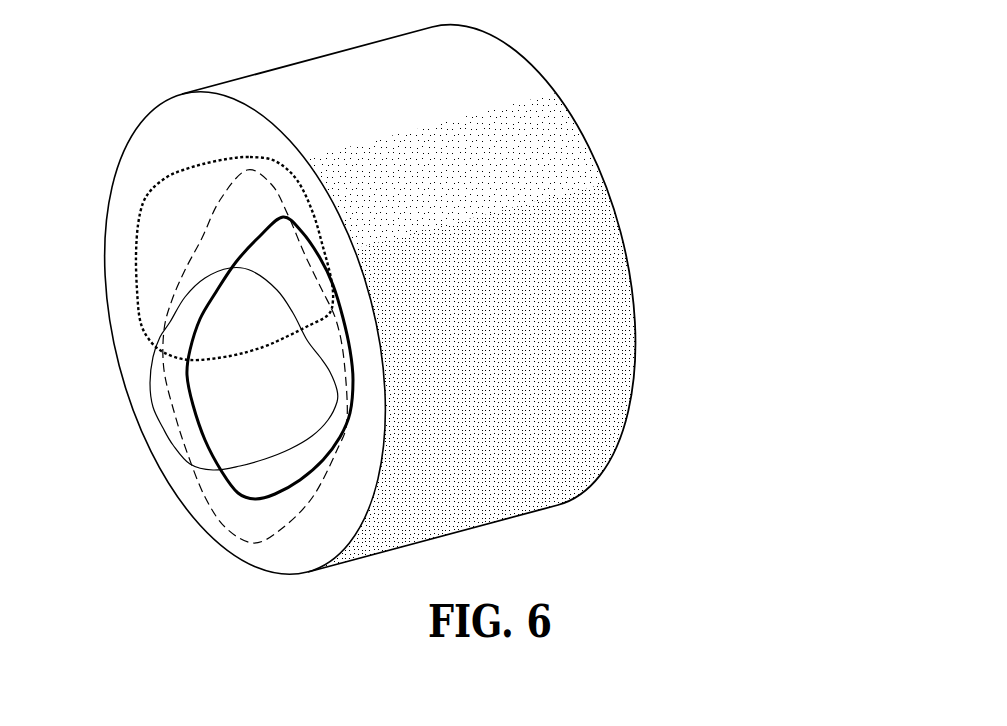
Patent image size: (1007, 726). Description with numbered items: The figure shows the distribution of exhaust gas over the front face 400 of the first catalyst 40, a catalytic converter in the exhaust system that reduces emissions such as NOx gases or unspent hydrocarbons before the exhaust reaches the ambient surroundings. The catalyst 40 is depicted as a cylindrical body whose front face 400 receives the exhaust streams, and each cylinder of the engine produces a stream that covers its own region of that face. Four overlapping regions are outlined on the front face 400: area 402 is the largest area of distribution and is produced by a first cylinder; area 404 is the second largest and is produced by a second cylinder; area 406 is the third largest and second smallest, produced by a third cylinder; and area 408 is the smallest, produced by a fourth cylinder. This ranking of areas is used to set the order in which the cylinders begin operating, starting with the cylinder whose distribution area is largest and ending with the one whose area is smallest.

The first catalyst 40 is at (365, 361).
The front face 400 is at (161, 142).
The area 402 is at (208, 492).
The area 404 is at (238, 493).
The area 406 is at (142, 305).
The area 408 is at (152, 386).